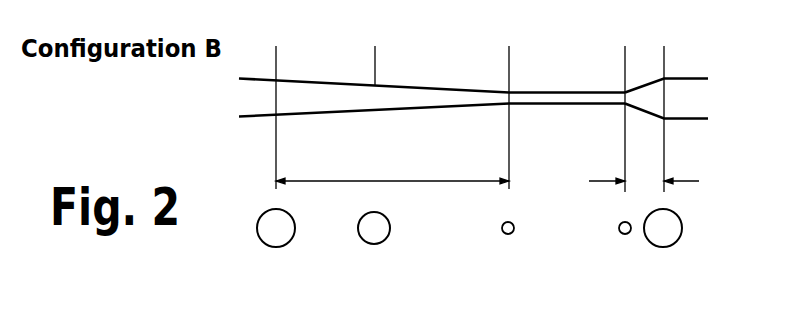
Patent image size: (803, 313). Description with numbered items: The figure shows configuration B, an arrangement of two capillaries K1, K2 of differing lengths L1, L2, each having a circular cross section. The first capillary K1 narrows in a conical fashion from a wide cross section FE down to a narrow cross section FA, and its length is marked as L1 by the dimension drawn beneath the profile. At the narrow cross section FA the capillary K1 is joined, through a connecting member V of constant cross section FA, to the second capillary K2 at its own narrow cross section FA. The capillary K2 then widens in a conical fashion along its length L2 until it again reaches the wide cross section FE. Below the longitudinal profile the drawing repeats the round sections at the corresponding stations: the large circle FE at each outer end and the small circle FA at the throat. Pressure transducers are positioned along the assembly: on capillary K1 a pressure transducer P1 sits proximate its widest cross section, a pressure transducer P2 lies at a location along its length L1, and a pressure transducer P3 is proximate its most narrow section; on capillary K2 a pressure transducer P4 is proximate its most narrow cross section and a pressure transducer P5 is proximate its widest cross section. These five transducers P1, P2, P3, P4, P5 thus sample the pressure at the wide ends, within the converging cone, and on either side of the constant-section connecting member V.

The pressure transducer P1 is at (276, 96).
The pressure transducer P2 is at (375, 44).
The pressure transducer P3 is at (509, 96).
The pressure transducer P4 is at (625, 98).
The pressure transducer P5 is at (664, 98).
The capillary K1 is at (405, 108).
The capillary K2 is at (646, 113).
The connecting member V is at (547, 104).
The length L1 is at (392, 170).
The length L2 is at (644, 181).
The wide cross section FE is at (680, 262).
The narrow cross section FA is at (625, 234).